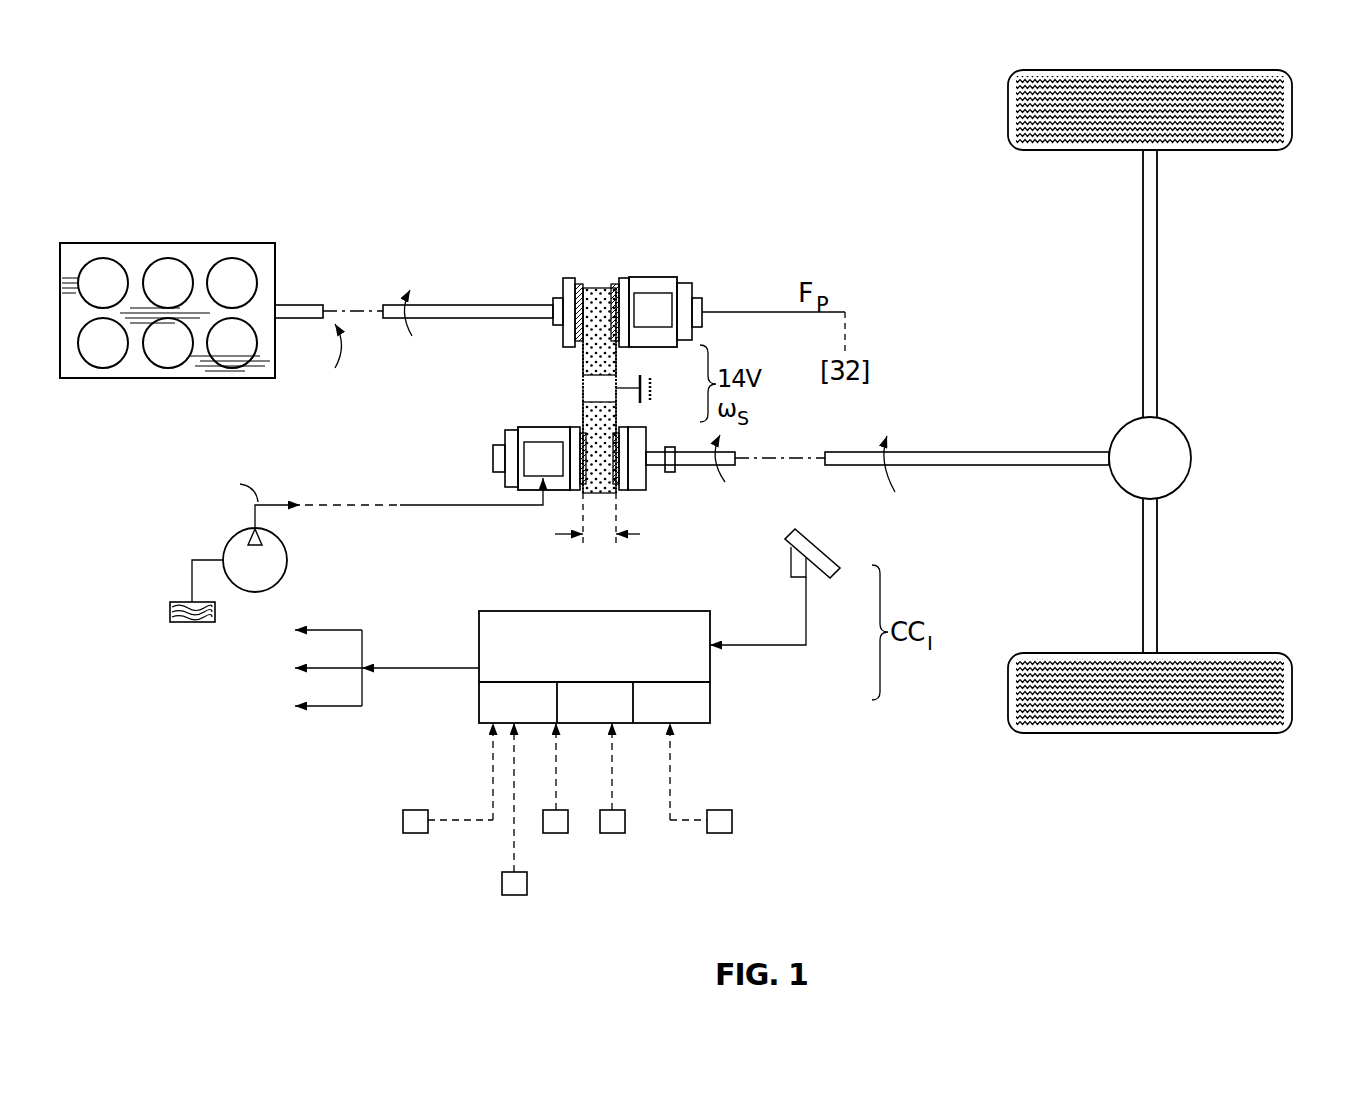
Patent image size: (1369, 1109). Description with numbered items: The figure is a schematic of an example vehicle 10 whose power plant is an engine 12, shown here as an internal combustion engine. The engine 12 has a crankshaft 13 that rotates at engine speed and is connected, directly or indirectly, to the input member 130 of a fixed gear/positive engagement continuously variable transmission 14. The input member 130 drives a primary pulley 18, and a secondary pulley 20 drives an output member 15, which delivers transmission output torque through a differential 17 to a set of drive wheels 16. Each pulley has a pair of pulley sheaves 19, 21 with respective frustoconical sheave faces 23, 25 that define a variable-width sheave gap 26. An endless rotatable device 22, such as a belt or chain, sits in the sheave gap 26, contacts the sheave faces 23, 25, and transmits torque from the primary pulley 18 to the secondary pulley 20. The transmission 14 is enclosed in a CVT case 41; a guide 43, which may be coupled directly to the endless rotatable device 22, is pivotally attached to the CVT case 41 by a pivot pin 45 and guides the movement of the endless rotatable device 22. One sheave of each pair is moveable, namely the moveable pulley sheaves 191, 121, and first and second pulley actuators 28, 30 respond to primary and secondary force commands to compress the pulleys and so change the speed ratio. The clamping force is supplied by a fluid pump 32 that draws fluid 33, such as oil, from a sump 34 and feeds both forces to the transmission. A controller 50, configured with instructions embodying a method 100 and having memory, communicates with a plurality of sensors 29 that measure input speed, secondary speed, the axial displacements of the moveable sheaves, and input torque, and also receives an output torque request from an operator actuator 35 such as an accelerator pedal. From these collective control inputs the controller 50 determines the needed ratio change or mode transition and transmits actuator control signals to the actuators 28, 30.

The vehicle 10 is at (372, 123).
The engine 12 is at (95, 243).
The crankshaft 13 is at (288, 306).
The input member 130 is at (470, 304).
The continuously variable transmission 14 is at (626, 186).
The primary pulley 18 is at (666, 211).
The pulley sheaves 19 is at (660, 278).
The moveable pulley sheave 191 is at (691, 284).
The endless rotatable device 22 is at (575, 305).
The sheave face 23 is at (618, 292).
The guide 43 is at (597, 335).
The sheave face 25 is at (580, 410).
The first pulley actuator 28 is at (668, 324).
The CVT case 41 is at (651, 382).
The pivot pin 45 is at (630, 391).
The secondary pulley 20 is at (513, 545).
The pulley sheaves 21 is at (523, 428).
The second pulley actuator 30 is at (558, 473).
The moveable pulley sheave 121 is at (499, 440).
The sheave gap 26 is at (631, 540).
The output member 15 is at (708, 478).
The differential 17 is at (1165, 472).
The drive wheels 16 is at (1291, 130).
The fluid pump 32 is at (270, 577).
The fluid 33 is at (176, 603).
The sump 34 is at (170, 623).
The operator actuator 35 is at (828, 557).
The controller 50 is at (607, 665).
The method 100 is at (541, 718).
The sensors 29 is at (760, 748).